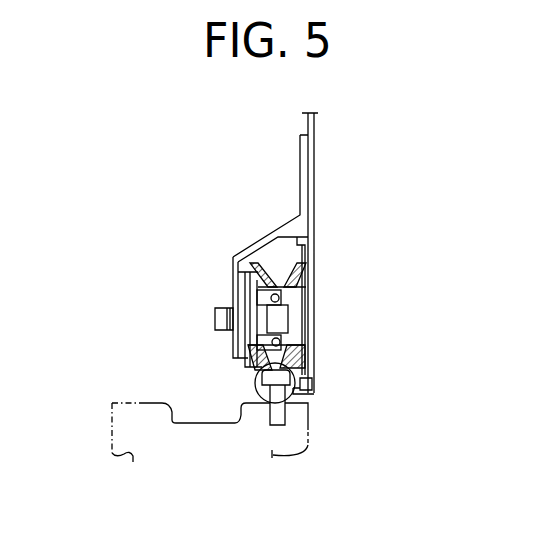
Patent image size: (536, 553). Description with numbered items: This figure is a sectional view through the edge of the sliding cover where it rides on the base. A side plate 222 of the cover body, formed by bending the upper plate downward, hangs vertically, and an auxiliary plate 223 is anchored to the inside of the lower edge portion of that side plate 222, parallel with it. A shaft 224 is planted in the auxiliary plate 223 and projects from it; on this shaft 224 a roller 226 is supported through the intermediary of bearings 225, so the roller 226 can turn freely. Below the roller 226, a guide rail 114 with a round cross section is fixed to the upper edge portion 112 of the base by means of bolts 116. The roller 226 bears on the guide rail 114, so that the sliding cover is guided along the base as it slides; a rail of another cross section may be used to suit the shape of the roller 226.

The side plate 222 is at (304, 181).
The auxiliary plate 223 is at (232, 280).
The shaft 224 is at (282, 321).
The bearings 225 is at (296, 302).
The roller 226 is at (311, 268).
The guide rail 114 is at (253, 398).
The bolts 116 is at (278, 415).
The upper edge portion 112 is at (128, 424).